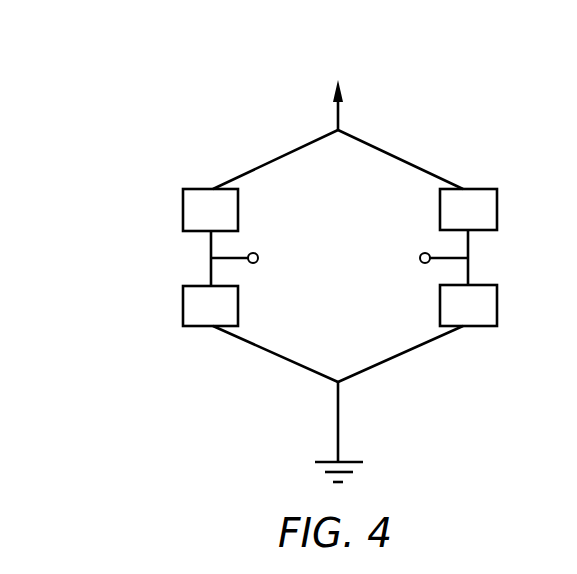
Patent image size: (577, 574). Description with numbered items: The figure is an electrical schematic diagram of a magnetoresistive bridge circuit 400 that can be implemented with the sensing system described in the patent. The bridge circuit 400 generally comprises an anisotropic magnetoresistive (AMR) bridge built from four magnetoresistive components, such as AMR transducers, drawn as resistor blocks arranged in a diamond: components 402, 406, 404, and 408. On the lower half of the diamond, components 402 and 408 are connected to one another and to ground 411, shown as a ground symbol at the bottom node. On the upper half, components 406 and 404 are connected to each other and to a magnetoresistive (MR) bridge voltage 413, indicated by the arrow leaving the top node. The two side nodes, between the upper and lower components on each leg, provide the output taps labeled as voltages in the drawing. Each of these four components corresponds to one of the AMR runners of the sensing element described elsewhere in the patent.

The magnetoresistive bridge circuit 400 is at (503, 440).
The magnetoresistive component 402 is at (232, 305).
The magnetoresistive component 404 is at (490, 208).
The magnetoresistive component 406 is at (232, 208).
The magnetoresistive component 408 is at (490, 305).
The ground 411 is at (317, 444).
The magnetoresistive (MR) bridge voltage 413 is at (397, 95).